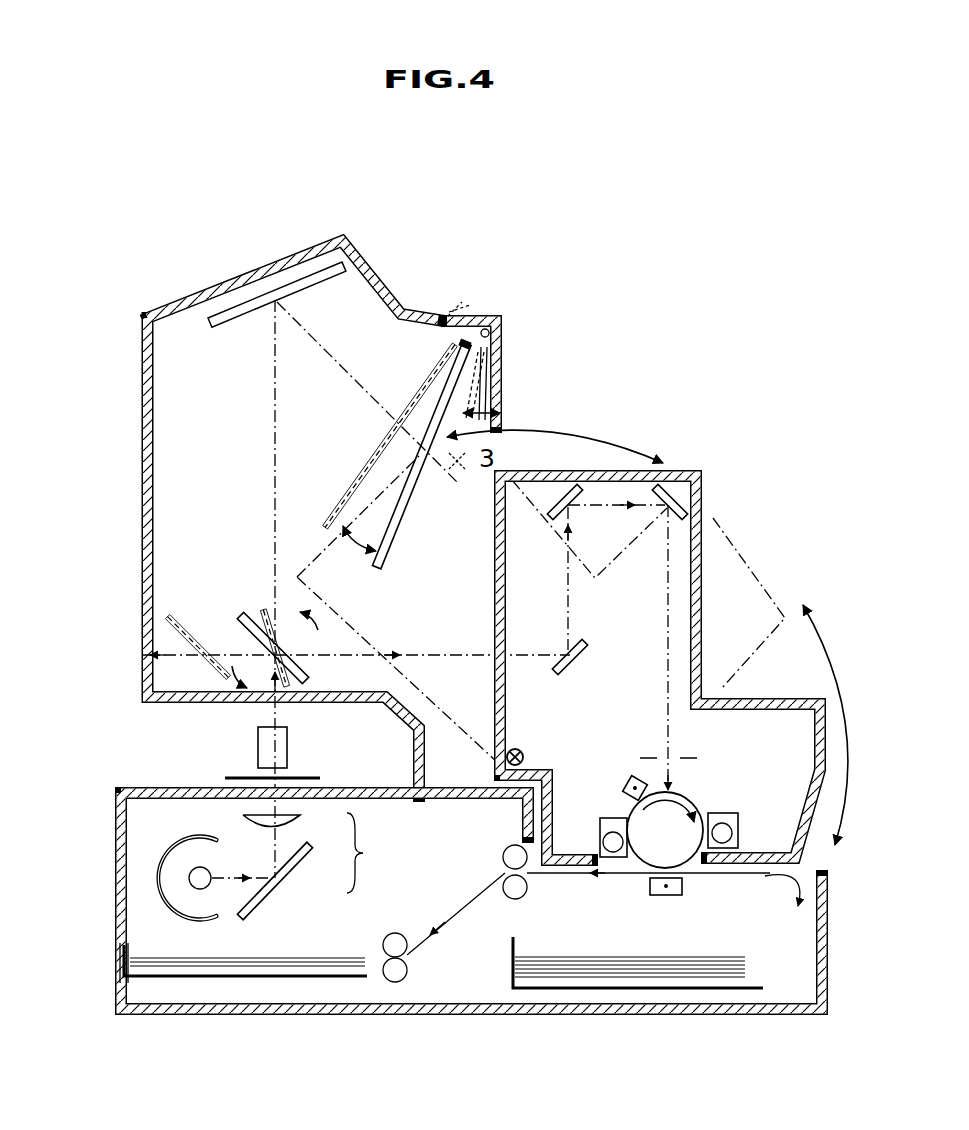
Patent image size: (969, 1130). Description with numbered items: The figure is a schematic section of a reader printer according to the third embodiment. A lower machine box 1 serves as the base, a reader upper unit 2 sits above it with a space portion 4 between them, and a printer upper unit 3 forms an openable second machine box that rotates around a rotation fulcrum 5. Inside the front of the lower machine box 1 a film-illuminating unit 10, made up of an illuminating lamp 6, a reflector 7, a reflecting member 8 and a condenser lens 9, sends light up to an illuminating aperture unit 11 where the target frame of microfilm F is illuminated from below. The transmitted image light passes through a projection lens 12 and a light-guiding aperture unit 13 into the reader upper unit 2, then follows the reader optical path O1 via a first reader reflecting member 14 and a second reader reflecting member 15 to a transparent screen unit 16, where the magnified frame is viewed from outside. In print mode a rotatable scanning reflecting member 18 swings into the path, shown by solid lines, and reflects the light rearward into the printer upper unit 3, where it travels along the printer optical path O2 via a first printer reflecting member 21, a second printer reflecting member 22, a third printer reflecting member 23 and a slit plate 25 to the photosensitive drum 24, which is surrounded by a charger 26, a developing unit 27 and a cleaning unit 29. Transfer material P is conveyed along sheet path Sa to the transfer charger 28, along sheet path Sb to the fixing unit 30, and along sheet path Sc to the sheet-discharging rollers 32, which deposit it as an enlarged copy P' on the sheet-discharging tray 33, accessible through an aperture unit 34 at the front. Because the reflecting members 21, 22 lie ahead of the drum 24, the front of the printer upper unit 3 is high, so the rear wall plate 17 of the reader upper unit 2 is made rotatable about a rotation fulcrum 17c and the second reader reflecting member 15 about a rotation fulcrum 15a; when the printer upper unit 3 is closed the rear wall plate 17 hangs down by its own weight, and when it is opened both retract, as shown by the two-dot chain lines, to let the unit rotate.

The lower machine box 1 is at (114, 822).
The upper unit of reader unit 2 is at (250, 262).
The upper unit of printer unit 3 is at (703, 468).
The space portion 4 is at (115, 727).
The rotation fulcrum 5 is at (522, 752).
The illuminating lamp 6 is at (208, 872).
The reflector 7 is at (186, 845).
The reflecting member 8 is at (300, 876).
The condenser lens 9 is at (300, 821).
The film-illuminating unit 10 is at (399, 869).
The illuminating aperture unit 11 is at (305, 777).
The projection lens 12 is at (289, 749).
The light-guiding aperture unit 13 is at (258, 700).
The first reader reflecting member 14 is at (226, 328).
The second reader reflecting member 15 is at (352, 486).
The rotation fulcrum 15a is at (462, 343).
The transparent screen unit 16 is at (146, 415).
The rear wall plate 17 is at (487, 410).
The rotation fulcrum 17c is at (487, 322).
The scanning reflecting member 18 is at (200, 637).
The first printer reflecting member 21 is at (585, 660).
The second printer reflecting member 22 is at (560, 497).
The third printer reflecting member 23 is at (680, 505).
The photosensitive drum 24 is at (695, 813).
The slit plate 25 is at (692, 757).
The charger 26 is at (626, 782).
The developing unit 27 is at (739, 830).
The transfer charger 28 is at (683, 888).
The cleaning unit 29 is at (600, 840).
The fixing unit 30 is at (521, 897).
The sheet-discharging rollers 32 is at (405, 934).
The sheet-discharging tray 33 is at (240, 980).
The aperture unit 34 is at (118, 945).
The microfilm F is at (232, 777).
The reader optical path O1 is at (274, 512).
The printer optical path O2 is at (569, 598).
The transfer material P is at (638, 954).
The enlarged copy P' is at (247, 944).
The sheet path Sa is at (766, 882).
The sheet path Sb is at (607, 878).
The sheet path Sc is at (456, 886).